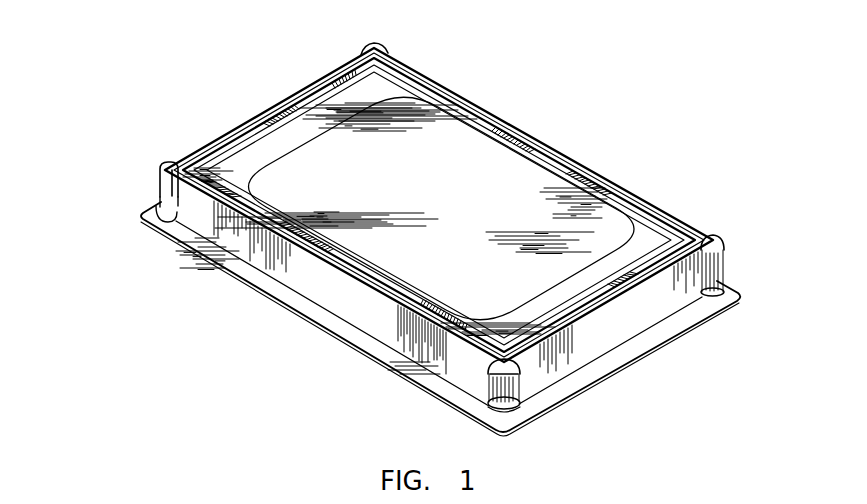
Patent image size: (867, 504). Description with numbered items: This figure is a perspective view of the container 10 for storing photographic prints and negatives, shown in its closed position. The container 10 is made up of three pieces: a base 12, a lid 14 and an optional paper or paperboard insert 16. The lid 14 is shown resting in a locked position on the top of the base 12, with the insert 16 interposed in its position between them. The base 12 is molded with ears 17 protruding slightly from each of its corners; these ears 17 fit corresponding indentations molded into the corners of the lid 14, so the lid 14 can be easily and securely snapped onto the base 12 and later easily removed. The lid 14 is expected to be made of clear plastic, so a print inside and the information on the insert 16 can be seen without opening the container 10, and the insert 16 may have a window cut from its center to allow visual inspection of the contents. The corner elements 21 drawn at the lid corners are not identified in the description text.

The tray / container lid 10 is at (138, 254).
The peripheral flange 12 is at (380, 352).
The central panel 14 is at (478, 180).
The recessed channel surrounding panel 16 is at (640, 257).
The corner post / leg 17 is at (378, 46).
The corner lug 21 is at (366, 46).